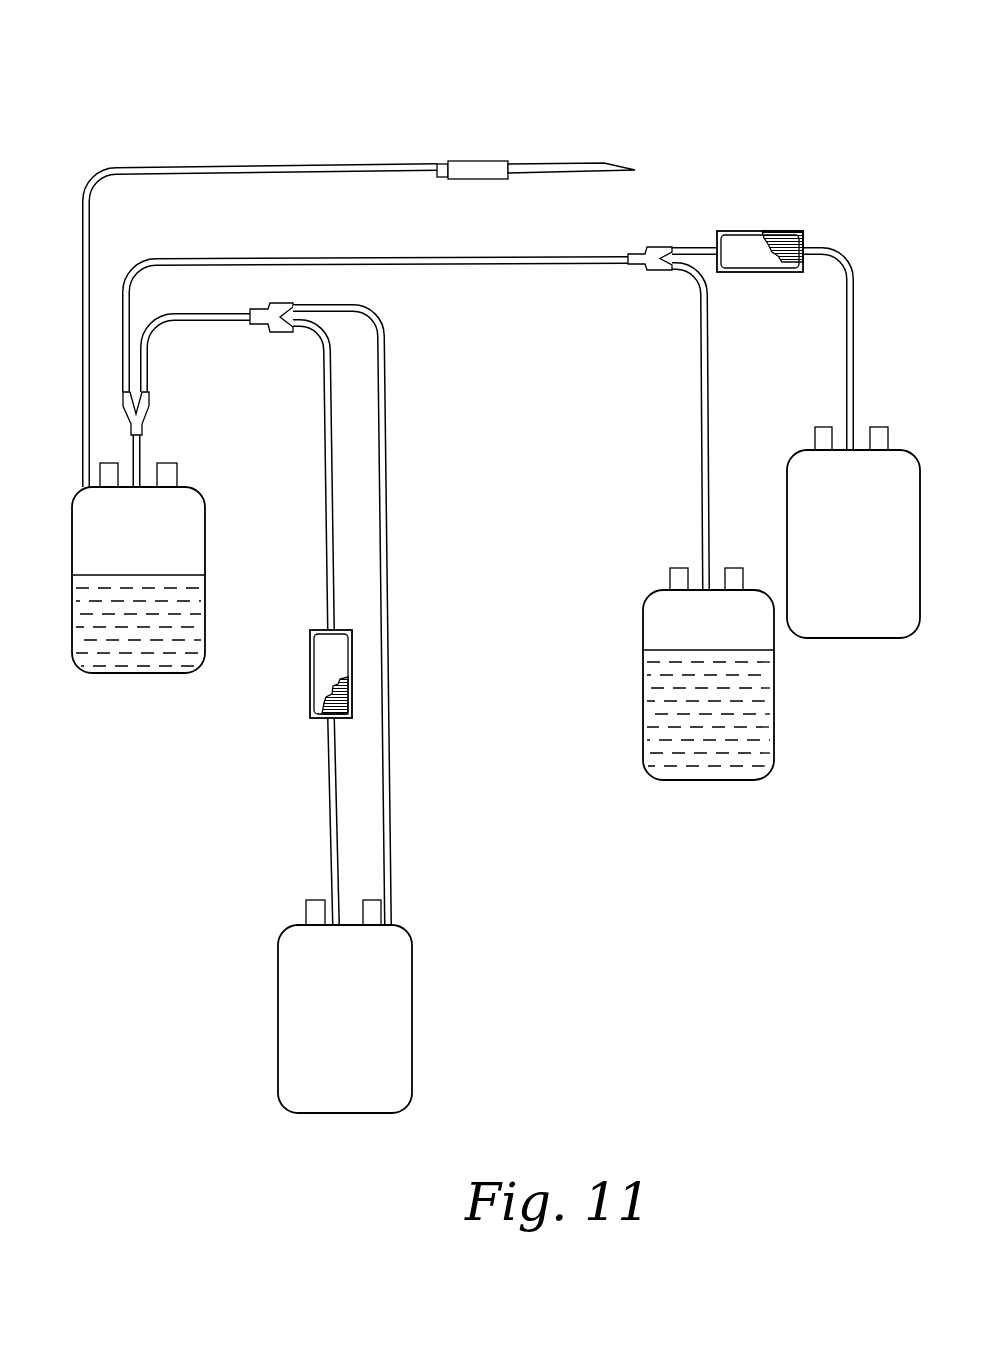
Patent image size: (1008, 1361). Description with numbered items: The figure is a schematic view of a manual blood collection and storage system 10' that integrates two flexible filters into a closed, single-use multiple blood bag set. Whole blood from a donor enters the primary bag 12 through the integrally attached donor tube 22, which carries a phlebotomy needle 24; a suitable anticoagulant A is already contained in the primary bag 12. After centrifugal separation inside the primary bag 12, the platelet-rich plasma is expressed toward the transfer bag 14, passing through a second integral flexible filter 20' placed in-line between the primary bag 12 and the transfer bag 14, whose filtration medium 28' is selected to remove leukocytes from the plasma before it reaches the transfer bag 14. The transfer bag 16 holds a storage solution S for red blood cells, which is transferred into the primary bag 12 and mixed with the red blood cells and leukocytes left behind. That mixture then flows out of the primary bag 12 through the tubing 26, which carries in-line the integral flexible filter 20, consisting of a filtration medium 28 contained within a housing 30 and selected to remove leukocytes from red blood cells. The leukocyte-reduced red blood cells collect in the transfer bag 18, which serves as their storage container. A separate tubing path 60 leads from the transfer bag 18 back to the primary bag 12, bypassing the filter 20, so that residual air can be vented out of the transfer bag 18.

The blood collection and storage system 10' is at (801, 57).
The primary bag 12 is at (169, 592).
The transfer bag 14 is at (808, 490).
The transfer bag 16 is at (712, 665).
The transfer bag 18 is at (392, 1057).
The flexible filter 20 is at (359, 648).
The second flexible filter 20' is at (783, 221).
The donor tube 22 is at (222, 165).
The phlebotomy needle 24 is at (466, 160).
The tubing 26 is at (328, 806).
The filtration medium 28 is at (402, 689).
The filtration medium 28' is at (806, 216).
The housing 30 is at (330, 690).
The tubing path 60 is at (388, 449).
The anticoagulant A is at (130, 645).
The storage solution S is at (745, 710).